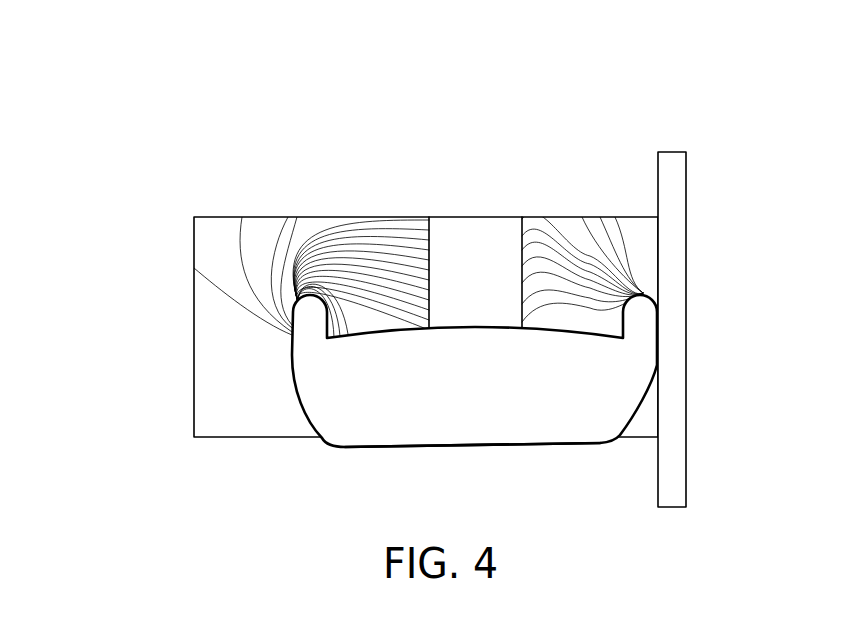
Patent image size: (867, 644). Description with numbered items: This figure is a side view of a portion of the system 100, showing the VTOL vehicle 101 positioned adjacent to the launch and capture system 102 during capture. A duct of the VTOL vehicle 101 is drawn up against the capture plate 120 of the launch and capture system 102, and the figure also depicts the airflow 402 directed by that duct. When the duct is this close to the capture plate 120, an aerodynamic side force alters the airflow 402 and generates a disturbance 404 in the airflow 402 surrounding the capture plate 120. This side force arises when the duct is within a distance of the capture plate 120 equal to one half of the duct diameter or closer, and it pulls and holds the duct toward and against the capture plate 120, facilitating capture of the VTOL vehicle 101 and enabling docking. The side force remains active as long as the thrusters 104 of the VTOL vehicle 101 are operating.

The system 100 is at (150, 106).
The VTOL vehicle 101 is at (304, 461).
The launch and capture system 102 is at (718, 155).
The thrusters 104 is at (537, 448).
The capture plate 120 is at (672, 150).
The airflow 402 is at (318, 238).
The disturbance 404 is at (637, 242).